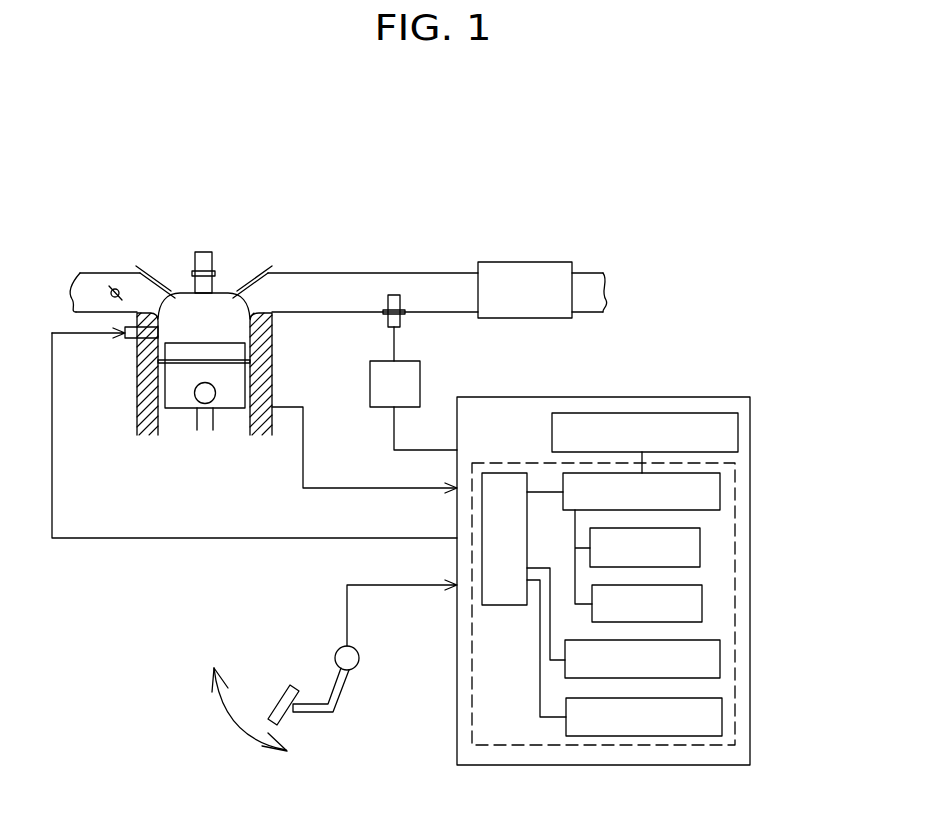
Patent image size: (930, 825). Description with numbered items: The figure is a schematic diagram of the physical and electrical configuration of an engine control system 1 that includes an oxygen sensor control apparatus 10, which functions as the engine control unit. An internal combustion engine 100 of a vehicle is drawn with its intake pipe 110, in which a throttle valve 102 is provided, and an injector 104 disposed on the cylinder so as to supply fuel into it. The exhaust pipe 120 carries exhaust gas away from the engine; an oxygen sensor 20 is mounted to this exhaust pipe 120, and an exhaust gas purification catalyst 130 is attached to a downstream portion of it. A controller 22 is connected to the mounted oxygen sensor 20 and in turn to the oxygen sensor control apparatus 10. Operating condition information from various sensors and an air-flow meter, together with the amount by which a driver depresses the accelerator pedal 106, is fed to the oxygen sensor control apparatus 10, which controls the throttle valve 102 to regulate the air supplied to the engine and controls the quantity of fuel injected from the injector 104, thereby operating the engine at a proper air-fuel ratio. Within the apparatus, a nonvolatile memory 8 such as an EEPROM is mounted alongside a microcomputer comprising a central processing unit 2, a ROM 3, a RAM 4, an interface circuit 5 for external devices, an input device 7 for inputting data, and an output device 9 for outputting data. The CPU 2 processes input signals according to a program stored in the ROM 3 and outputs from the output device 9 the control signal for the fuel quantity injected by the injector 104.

The engine control system 1 is at (688, 161).
The central processing unit (CPU) 2 is at (720, 488).
The ROM 3 is at (700, 546).
The RAM 4 is at (702, 603).
The interface circuit (I/F) 5 is at (502, 472).
The input device 7 is at (720, 657).
The nonvolatile memory 8 is at (738, 420).
The output device 9 is at (722, 717).
The oxygen sensor control apparatus 10 is at (750, 465).
The oxygen sensor 20 is at (402, 318).
The controller 22 is at (420, 382).
The internal combustion engine 100 is at (140, 447).
The throttle valve 102 is at (111, 297).
The injector 104 is at (129, 340).
The accelerator pedal 106 is at (332, 685).
The intake pipe 110 is at (78, 273).
The exhaust pipe 120 is at (374, 272).
The exhaust gas purification catalyst 130 is at (522, 262).